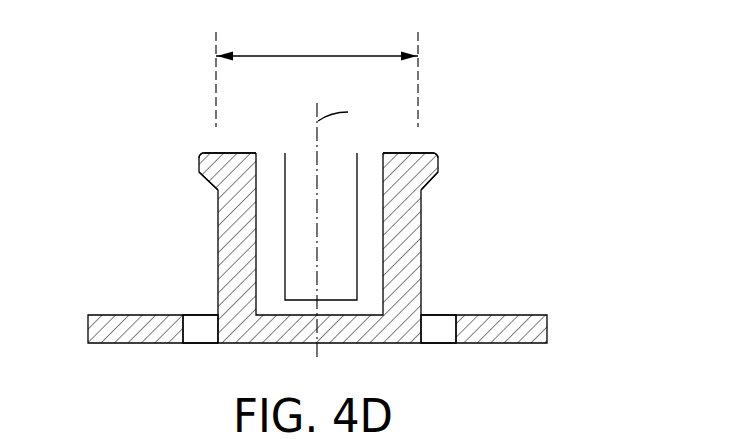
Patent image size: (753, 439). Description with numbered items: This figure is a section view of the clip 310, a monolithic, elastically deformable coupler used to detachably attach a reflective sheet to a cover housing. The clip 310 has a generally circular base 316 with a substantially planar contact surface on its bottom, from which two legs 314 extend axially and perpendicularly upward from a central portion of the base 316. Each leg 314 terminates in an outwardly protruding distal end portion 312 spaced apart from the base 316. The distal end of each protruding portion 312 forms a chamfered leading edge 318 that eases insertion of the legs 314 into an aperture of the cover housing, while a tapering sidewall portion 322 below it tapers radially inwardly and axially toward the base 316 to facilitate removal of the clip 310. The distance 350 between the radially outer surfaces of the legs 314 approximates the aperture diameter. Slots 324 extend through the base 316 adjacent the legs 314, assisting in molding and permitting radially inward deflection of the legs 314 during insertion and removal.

The clip 310 is at (134, 60).
The outwardly protruding distal end portion 312 is at (200, 172).
The leg 314 is at (218, 246).
The base 316 is at (547, 321).
The chamfered leading edge 318 is at (202, 150).
The tapering sidewall portion 322 is at (211, 191).
The slot 324 is at (203, 346).
The distance 350 is at (318, 55).